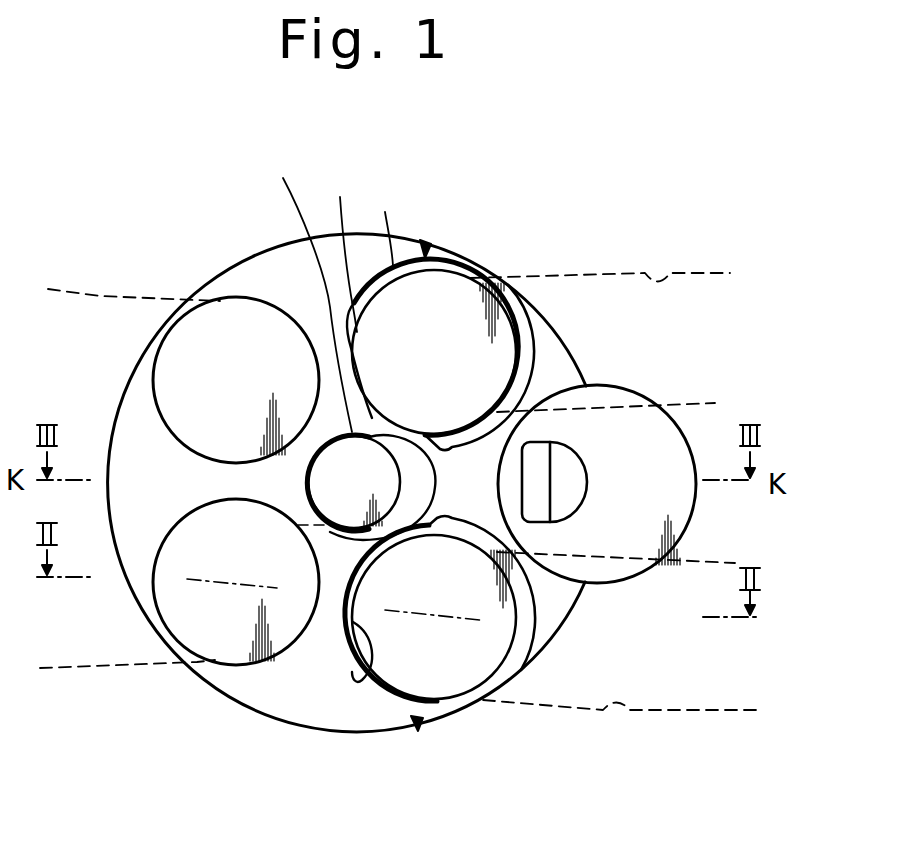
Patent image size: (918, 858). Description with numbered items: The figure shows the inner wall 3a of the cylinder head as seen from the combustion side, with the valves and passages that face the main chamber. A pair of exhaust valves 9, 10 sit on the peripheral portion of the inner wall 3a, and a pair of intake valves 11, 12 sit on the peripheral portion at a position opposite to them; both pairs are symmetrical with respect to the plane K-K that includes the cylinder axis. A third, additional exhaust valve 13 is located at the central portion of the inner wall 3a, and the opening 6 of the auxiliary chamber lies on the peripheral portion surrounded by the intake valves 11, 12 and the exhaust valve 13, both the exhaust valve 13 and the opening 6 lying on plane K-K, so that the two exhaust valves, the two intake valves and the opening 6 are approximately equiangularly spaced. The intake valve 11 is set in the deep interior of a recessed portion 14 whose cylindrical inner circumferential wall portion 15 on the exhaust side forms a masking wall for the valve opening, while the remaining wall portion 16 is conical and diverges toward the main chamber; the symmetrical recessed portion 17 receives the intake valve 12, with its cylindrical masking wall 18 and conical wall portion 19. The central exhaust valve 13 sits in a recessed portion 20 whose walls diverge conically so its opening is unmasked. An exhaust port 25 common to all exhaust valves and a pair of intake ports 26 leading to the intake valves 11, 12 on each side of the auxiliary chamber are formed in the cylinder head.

The inner wall of the cylinder head 3a is at (282, 260).
The opening of the auxiliary chamber 6 is at (577, 473).
The exhaust valve 9 is at (218, 647).
The exhaust valve 10 is at (230, 317).
The intake valve 11 is at (477, 675).
The intake valve 12 is at (453, 287).
The additional exhaust valve 13 is at (357, 517).
The recessed portion 14 is at (416, 710).
The cylindrical inner circumferential wall portion 15 is at (364, 660).
The inner circumferential wall portion 16 is at (387, 700).
The recessed portion 17 is at (425, 248).
The cylindrical inner circumferential wall portion 18 is at (338, 249).
The inner circumferential wall portion 19 is at (378, 222).
The recessed portion 20 is at (300, 289).
The exhaust port 25 is at (86, 292).
The intake ports 26 is at (670, 273).